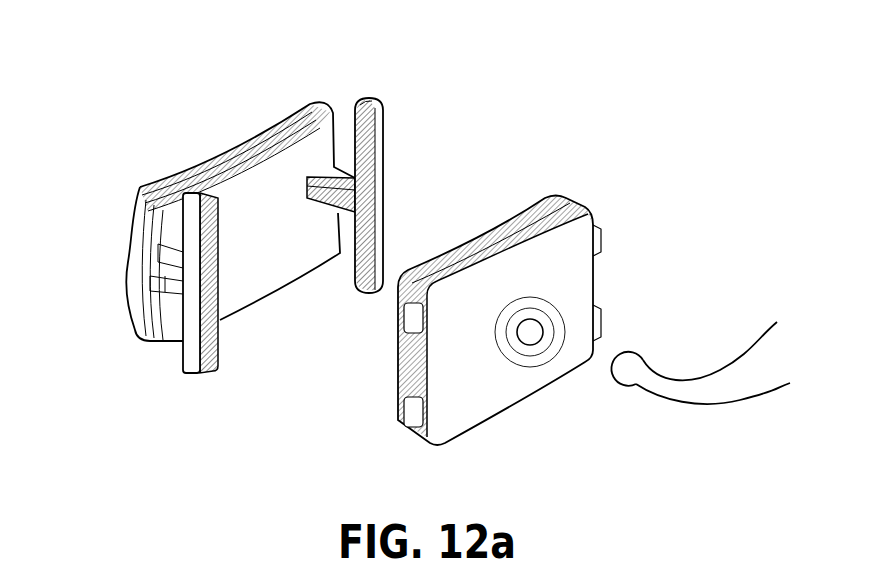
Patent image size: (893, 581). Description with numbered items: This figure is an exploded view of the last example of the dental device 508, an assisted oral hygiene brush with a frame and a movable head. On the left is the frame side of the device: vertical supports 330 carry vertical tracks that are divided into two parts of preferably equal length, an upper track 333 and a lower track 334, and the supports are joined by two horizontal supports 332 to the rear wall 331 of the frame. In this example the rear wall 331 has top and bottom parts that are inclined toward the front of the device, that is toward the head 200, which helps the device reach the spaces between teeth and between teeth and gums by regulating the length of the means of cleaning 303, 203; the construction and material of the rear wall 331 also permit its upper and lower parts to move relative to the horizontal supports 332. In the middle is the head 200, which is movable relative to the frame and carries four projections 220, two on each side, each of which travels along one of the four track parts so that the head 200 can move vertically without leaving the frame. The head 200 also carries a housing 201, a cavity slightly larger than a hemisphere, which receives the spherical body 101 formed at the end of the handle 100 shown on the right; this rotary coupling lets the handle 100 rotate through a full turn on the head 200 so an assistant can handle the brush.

The handle 100 is at (743, 380).
The spherical body 101 is at (637, 363).
The head 200 is at (542, 230).
The housing 201 is at (548, 318).
The means of cleaning 203 is at (516, 222).
The projections 220 is at (600, 243).
The means of cleaning 303 is at (258, 192).
The vertical supports 330 is at (385, 133).
The rear wall 331 is at (135, 212).
The horizontal supports 332 is at (130, 292).
The upper vertical track 333 is at (382, 103).
The lower vertical track 334 is at (385, 217).
The dental device 508 is at (655, 110).